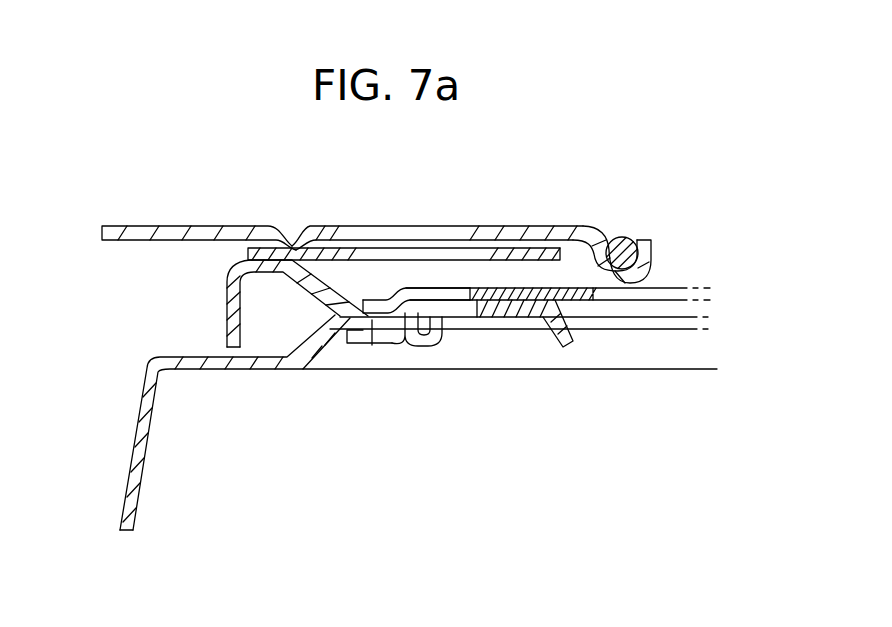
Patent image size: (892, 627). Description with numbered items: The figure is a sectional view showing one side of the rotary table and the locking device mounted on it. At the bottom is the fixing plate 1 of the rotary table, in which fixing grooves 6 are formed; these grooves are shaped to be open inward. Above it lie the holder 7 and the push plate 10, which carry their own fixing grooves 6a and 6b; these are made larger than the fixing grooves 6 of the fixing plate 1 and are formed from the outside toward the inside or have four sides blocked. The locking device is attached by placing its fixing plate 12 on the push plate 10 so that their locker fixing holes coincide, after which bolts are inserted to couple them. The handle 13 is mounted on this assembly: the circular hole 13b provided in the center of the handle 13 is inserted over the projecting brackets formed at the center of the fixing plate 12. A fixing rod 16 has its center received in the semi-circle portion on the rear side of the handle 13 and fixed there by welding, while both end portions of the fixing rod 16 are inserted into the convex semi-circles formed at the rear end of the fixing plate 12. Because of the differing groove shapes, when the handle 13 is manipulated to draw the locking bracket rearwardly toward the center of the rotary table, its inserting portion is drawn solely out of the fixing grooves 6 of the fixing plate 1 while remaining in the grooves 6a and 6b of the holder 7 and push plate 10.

The fixing plate 1 is at (135, 468).
The fixing grooves 6 is at (363, 300).
The fixing groove 6a is at (398, 335).
The fixing groove 6b is at (443, 290).
The holder 7 is at (507, 307).
The push plate 10 is at (228, 306).
The fixing plate 12 is at (535, 248).
The handle 13 is at (153, 232).
The circular hole 13b is at (403, 230).
The fixing rod 16 is at (627, 237).